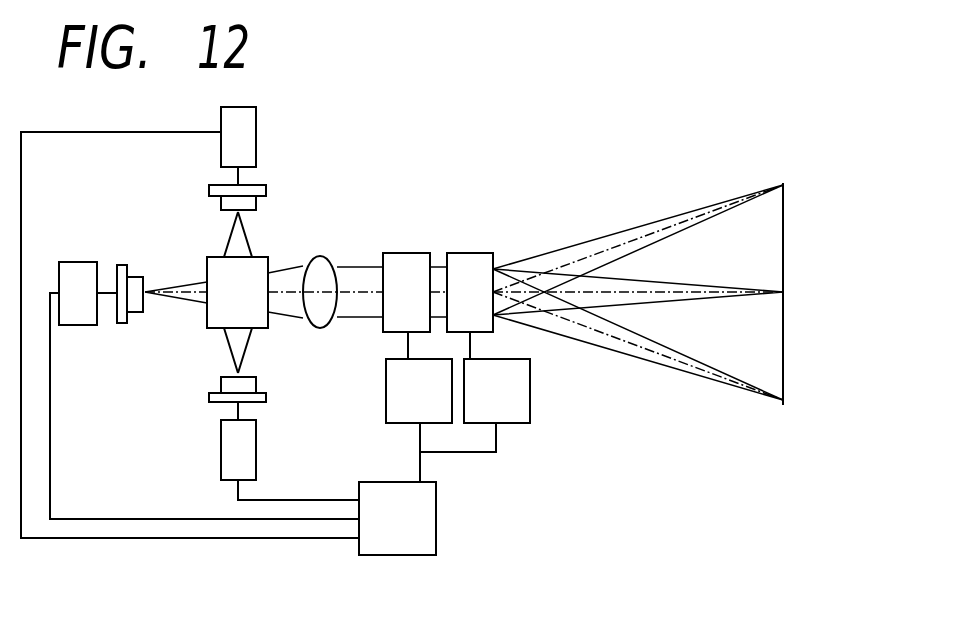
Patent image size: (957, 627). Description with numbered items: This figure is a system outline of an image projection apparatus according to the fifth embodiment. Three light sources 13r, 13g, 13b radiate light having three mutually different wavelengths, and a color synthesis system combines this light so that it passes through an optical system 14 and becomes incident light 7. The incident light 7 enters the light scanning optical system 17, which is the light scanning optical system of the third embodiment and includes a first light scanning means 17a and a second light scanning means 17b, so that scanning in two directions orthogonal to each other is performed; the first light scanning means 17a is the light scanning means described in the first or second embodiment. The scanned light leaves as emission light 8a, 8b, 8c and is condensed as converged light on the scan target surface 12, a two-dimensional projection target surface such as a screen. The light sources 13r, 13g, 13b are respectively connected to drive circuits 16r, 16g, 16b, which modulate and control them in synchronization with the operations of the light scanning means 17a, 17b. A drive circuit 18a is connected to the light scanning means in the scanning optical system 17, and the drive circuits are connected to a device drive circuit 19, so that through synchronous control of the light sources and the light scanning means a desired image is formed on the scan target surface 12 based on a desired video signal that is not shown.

The drive circuit 16r is at (256, 115).
The light source 13r is at (266, 188).
The drive circuit 16g is at (72, 262).
The light source 13g is at (122, 265).
The light source 13b is at (266, 398).
The drive circuit 16b is at (256, 450).
The incident light 7 is at (358, 267).
The optical system 14 is at (332, 257).
The light scanning optical system 17 is at (460, 211).
The first light scanning means 17a is at (395, 253).
The second light scanning means 17b is at (470, 253).
The emission light 8a is at (667, 290).
The emission light 8b is at (607, 248).
The emission light 8c is at (613, 335).
The scan target surface 12 is at (783, 200).
The scanner driver 18a is at (386, 378).
The device drive circuit 19 is at (436, 497).